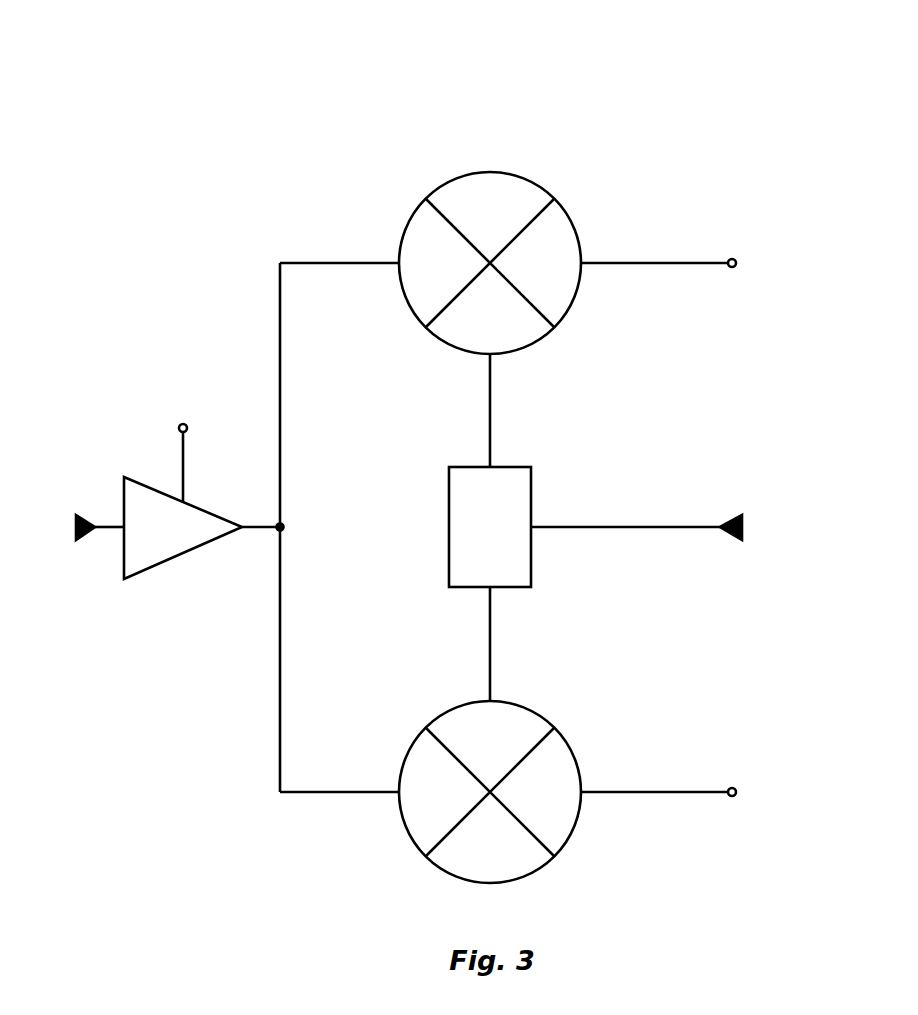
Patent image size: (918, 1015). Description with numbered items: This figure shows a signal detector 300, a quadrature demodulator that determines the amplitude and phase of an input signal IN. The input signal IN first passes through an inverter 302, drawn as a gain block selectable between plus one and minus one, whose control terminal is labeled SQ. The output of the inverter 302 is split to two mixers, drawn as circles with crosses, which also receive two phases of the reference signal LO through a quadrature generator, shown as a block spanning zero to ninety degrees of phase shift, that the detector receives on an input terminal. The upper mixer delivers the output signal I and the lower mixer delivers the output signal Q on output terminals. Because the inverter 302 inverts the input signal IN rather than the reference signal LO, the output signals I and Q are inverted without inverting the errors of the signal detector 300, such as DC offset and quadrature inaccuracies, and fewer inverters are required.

The signal detector 300 is at (433, 454).
The inverter 302 is at (202, 525).
The input signal IN is at (87, 527).
The reference signal LO is at (653, 527).
The output signal I is at (664, 263).
The output signal Q is at (668, 792).
The sign control signal SQ is at (183, 453).